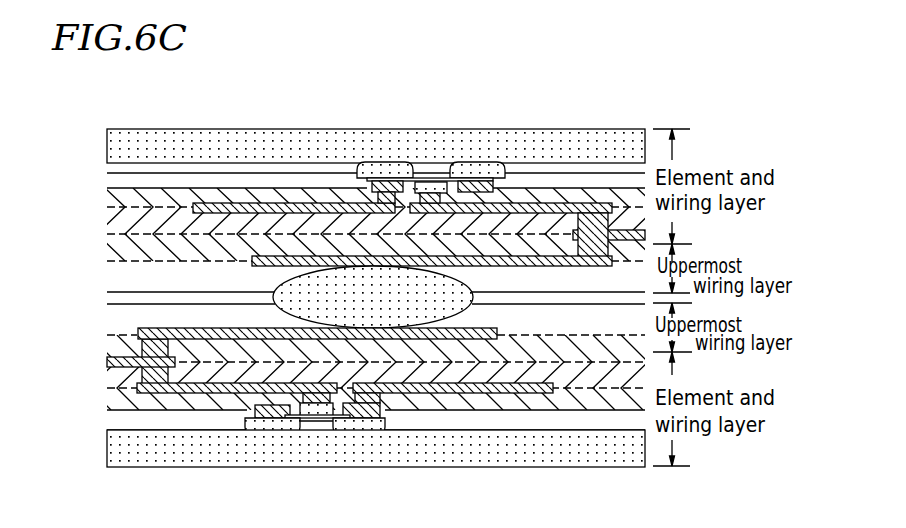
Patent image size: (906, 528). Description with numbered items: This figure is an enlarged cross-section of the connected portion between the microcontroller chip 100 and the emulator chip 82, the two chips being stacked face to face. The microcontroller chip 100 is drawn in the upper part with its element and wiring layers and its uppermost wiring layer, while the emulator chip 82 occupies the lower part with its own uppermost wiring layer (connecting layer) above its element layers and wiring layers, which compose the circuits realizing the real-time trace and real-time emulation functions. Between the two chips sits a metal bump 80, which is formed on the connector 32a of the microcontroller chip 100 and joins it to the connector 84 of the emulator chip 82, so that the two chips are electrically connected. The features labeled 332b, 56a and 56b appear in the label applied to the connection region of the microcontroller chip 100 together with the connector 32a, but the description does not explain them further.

The connector 32a is at (318, 256).
The connection electrode 332b is at (431, 192).
The bump 56a is at (475, 186).
The bump 56b is at (431, 171).
The metal bump 80 is at (276, 290).
The connector 84 is at (153, 328).
The microcontroller chip 100 is at (797, 127).
The emulator chip 82 is at (797, 300).